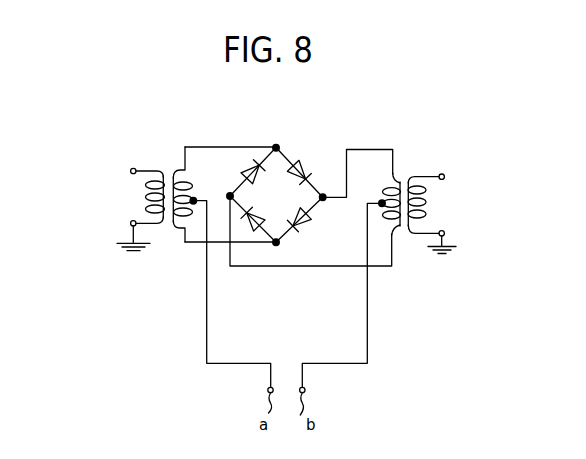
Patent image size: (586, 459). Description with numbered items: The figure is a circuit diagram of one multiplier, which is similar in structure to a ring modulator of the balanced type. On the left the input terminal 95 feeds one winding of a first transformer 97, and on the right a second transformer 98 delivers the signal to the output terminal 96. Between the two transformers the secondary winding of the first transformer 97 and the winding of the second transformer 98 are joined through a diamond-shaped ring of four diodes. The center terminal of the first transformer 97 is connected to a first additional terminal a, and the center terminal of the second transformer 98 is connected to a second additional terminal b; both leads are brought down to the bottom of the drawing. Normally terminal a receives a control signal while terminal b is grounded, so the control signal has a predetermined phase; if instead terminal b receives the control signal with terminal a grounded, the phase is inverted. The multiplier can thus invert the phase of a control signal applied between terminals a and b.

The input terminal 95 is at (131, 200).
The output terminal 96 is at (433, 208).
The first transformer 97 is at (176, 167).
The second transformer 98 is at (403, 178).